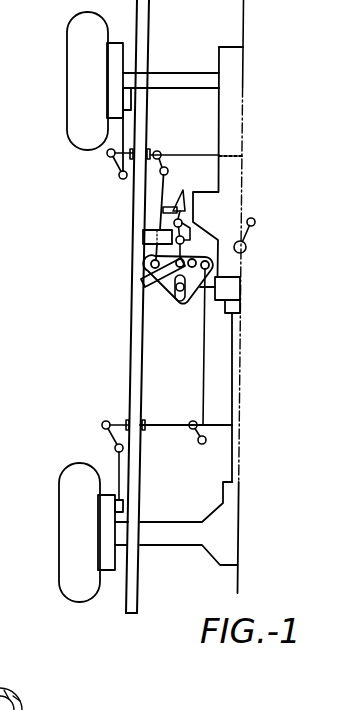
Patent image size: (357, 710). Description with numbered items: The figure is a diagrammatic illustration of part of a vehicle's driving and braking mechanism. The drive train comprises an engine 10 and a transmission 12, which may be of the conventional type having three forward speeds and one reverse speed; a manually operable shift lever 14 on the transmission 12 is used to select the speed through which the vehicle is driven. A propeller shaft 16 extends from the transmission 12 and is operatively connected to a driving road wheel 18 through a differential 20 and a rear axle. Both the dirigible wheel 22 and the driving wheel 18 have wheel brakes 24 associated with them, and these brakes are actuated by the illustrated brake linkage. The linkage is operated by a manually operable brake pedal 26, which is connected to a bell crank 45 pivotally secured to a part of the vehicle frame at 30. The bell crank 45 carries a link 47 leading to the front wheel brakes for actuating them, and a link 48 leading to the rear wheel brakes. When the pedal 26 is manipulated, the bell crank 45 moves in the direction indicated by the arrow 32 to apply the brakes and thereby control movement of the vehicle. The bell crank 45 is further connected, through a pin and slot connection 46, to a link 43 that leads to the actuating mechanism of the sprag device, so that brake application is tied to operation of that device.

The engine 10 is at (232, 138).
The transmission 12 is at (233, 268).
The shift lever 14 is at (256, 232).
The propeller shaft 16 is at (245, 352).
The road wheel 18 is at (91, 532).
The differential 20 is at (229, 528).
The dirigible wheel 22 is at (87, 81).
The wheel brakes 24 is at (113, 62).
The brake pedal 26 is at (185, 205).
The pivot on vehicle frame 30 is at (184, 264).
The arrow 32 is at (158, 280).
The link 43 is at (199, 290).
The bell crank 45 is at (166, 289).
The pin and slot connection 46 is at (178, 301).
The link 47 is at (150, 221).
The link 48 is at (203, 355).